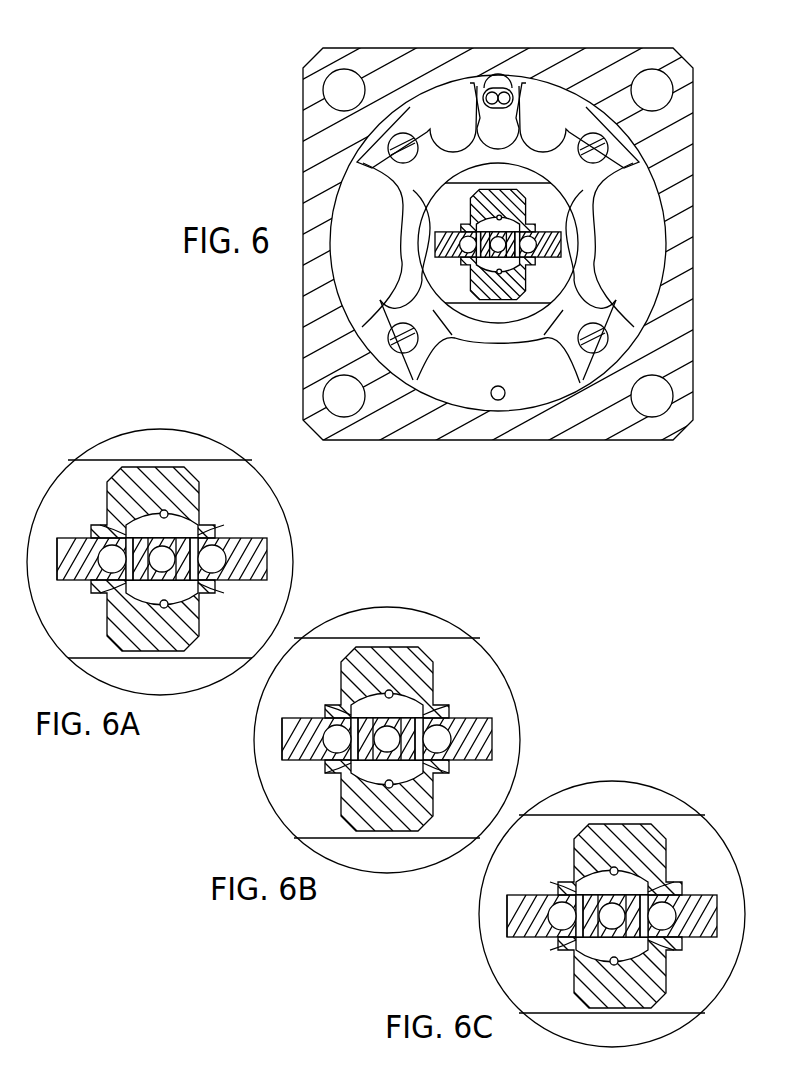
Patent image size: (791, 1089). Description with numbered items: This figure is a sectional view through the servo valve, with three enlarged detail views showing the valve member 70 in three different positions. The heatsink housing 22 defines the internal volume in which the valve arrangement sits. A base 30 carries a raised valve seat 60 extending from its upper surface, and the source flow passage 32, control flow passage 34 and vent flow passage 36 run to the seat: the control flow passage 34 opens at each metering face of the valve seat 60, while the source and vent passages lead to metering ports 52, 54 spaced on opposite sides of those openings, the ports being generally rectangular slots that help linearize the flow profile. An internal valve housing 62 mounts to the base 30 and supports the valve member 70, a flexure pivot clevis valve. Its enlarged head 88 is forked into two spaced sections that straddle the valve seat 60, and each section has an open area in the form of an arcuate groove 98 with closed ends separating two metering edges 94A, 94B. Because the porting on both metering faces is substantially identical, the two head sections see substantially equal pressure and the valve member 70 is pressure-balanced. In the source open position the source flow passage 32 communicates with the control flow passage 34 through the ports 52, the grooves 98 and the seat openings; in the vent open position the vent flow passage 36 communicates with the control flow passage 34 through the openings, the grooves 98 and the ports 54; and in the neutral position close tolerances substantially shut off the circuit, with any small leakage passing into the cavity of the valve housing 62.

In FIG. 6, the heatsink housing 22 is at (683, 165).
In FIG. 6, the base 30 is at (543, 388).
In FIG. 6A, the source flow passage 32 is at (88, 581).
In FIG. 6B, the source flow passage 32 is at (327, 762).
In FIG. 6C, the source flow passage 32 is at (552, 940).
In FIG. 6A, the control flow passage 34 is at (145, 617).
In FIG. 6B, the control flow passage 34 is at (371, 796).
In FIG. 6C, the control flow passage 34 is at (596, 973).
In FIG. 6A, the vent flow passage 36 is at (241, 574).
In FIG. 6B, the vent flow passage 36 is at (467, 754).
In FIG. 6C, the vent flow passage 36 is at (675, 940).
In FIG. 6A, the metering ports 52 is at (83, 549).
In FIG. 6B, the metering ports 52 is at (309, 726).
In FIG. 6C, the metering ports 52 is at (534, 904).
In FIG. 6A, the metering ports 54 is at (174, 541).
In FIG. 6B, the metering ports 54 is at (399, 723).
In FIG. 6C, the metering ports 54 is at (624, 895).
In FIG. 6, the valve seat 60 is at (560, 243).
In FIG. 6, the internal valve housing 62 is at (583, 302).
In FIG. 6A, the internal valve housing 62 is at (193, 549).
In FIG. 6B, the internal valve housing 62 is at (399, 694).
In FIG. 6C, the internal valve housing 62 is at (624, 865).
In FIG. 6, the valve member 70 is at (512, 192).
In FIG. 6, the head 88 is at (475, 275).
In FIG. 6A, the head 88 is at (232, 524).
In FIG. 6B, the head 88 is at (418, 704).
In FIG. 6C, the head 88 is at (580, 880).
In FIG. 6A, the metering edge 94A is at (88, 572).
In FIG. 6B, the metering edge 94A is at (283, 754).
In FIG. 6C, the metering edge 94A is at (513, 930).
In FIG. 6A, the metering edge 94B is at (230, 554).
In FIG. 6B, the metering edge 94B is at (460, 729).
In FIG. 6C, the metering edge 94B is at (697, 935).
In FIG. 6A, the arcuate grooves 98 is at (162, 540).
In FIG. 6B, the arcuate grooves 98 is at (387, 718).
In FIG. 6C, the arcuate grooves 98 is at (612, 893).